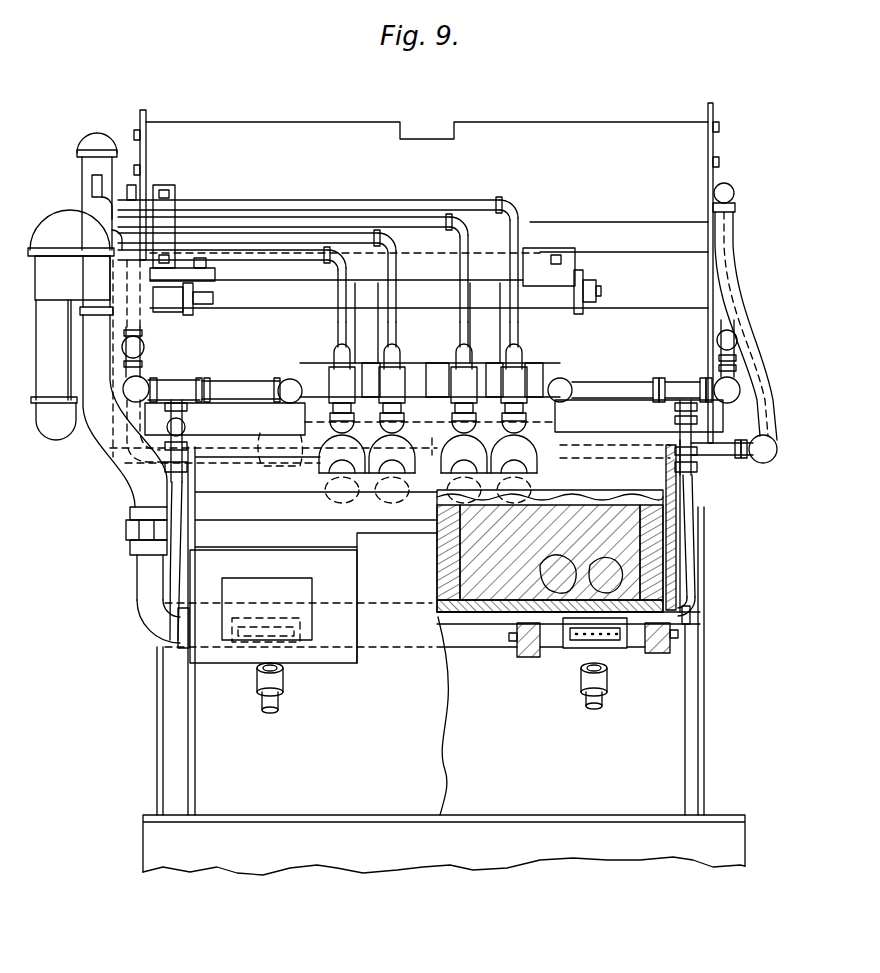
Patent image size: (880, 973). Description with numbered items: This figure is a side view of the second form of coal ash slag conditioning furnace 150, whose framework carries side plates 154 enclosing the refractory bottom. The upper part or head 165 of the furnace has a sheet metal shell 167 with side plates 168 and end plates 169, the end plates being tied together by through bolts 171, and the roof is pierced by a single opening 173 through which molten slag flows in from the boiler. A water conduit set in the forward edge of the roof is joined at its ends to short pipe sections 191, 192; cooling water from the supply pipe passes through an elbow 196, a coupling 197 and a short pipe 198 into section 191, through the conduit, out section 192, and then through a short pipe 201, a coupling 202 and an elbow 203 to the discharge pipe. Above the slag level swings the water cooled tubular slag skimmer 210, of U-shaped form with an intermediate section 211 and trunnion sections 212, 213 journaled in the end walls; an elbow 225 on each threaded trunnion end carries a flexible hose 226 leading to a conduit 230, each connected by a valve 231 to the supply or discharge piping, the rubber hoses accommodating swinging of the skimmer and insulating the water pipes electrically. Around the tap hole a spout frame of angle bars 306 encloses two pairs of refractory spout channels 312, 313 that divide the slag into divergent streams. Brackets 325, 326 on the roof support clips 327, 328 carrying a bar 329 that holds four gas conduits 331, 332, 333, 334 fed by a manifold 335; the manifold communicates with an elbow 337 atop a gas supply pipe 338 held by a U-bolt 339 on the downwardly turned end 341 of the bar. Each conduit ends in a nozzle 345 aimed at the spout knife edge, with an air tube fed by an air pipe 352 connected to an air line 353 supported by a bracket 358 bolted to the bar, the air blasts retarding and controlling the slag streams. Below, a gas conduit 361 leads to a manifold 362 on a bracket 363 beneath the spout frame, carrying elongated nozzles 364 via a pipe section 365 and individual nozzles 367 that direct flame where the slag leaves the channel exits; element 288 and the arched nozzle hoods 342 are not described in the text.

The coal ash slag conditioning furnace 150 is at (671, 60).
The side plates 154 is at (482, 824).
The furnace head 165 is at (351, 112).
The sheet metal shell 167 is at (669, 211).
The side plates 168 is at (598, 232).
The end plates 169 is at (148, 140).
The through bolts 171 is at (134, 168).
The opening 173 is at (445, 122).
The pipe section 191 is at (290, 384).
The pipe section 192 is at (585, 388).
The elbow 196 is at (148, 385).
The coupling 197 is at (188, 390).
The short pipe 198 is at (232, 392).
The short pipe 201 is at (642, 388).
The coupling 202 is at (679, 386).
The elbow 203 is at (740, 382).
The slag skimmer 210 is at (432, 453).
The intermediate section 211 is at (433, 438).
The trunnion section 212 is at (273, 434).
The trunnion section 213 is at (639, 429).
The elbow 225 is at (126, 468).
The flexible hose 226 is at (106, 444).
The conduit 230 is at (732, 274).
The valve 231 is at (144, 350).
The legs 288 is at (165, 756).
The angle bars 306 is at (662, 656).
The spout channels 312 is at (552, 652).
The spout channels 313 is at (635, 652).
The bracket 325 is at (196, 312).
The bracket 326 is at (589, 276).
The clip 327 is at (200, 289).
The clip 328 is at (602, 301).
The bar 329 is at (530, 258).
The gas conduit 331 is at (337, 303).
The gas conduit 332 is at (400, 306).
The gas conduit 333 is at (459, 303).
The gas conduit 334 is at (519, 303).
The manifold 335 is at (312, 201).
The elbow 337 is at (58, 214).
The gas supply pipe 338 is at (55, 350).
The U-bolt 339 is at (36, 299).
The downwardly turned end 341 is at (80, 311).
The nozzle hood 342 is at (346, 466).
The nozzle 345 is at (450, 412).
The air pipe 352 is at (337, 330).
The air line 353 is at (258, 250).
The bracket 358 is at (175, 200).
The gas conduit 361 is at (138, 486).
The gas manifold 362 is at (478, 634).
The bracket 363 is at (558, 526).
The elongated gas nozzles 364 is at (290, 650).
The pipe section 365 is at (588, 692).
The nozzles 367 is at (260, 688).